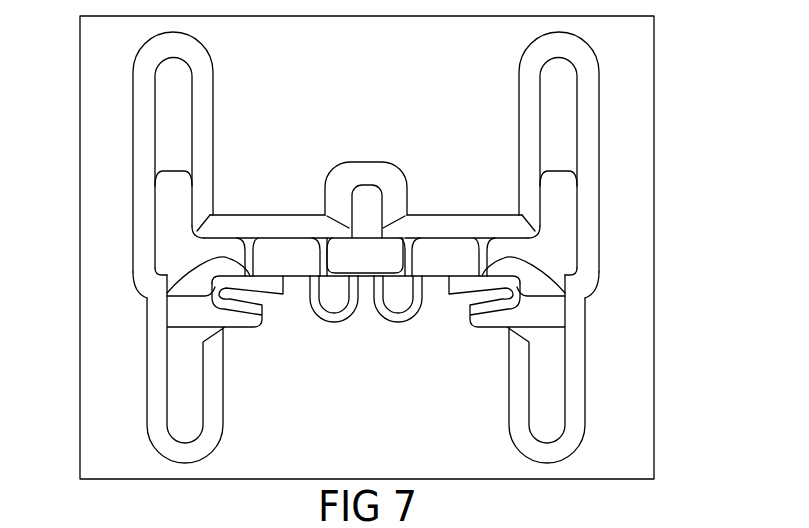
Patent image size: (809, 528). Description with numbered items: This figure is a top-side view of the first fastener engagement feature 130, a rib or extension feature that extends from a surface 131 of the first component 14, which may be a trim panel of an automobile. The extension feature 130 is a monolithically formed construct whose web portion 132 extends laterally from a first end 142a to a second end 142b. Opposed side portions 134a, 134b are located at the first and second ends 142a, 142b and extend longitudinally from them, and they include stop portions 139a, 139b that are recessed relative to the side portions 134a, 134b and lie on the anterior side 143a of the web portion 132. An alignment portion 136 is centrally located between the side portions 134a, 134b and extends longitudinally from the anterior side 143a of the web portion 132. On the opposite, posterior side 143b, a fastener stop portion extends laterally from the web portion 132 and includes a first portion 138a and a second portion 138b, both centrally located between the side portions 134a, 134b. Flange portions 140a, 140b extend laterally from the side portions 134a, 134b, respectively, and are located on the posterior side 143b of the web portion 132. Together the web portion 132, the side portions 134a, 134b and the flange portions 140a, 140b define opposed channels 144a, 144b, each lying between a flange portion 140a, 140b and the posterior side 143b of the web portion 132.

The first component 14 is at (375, 243).
The first fastener engagement feature 130 is at (369, 235).
The surface 131 is at (383, 71).
The web portion 132 is at (292, 262).
The side portion 134a is at (566, 260).
The side portion 134b is at (173, 250).
The alignment portion 136 is at (365, 197).
The first portion of fastener stop portion 138a is at (402, 302).
The second portion of fastener stop portion 138b is at (330, 300).
The stop portion 139a is at (562, 78).
The stop portion 139b is at (172, 82).
The flange portion 140a is at (510, 340).
The flange portion 140b is at (222, 340).
The first end 142a is at (532, 240).
The second end 142b is at (198, 226).
The anterior side 143a is at (288, 255).
The posterior side 143b is at (299, 265).
The channel 144a is at (572, 295).
The channel 144b is at (165, 293).